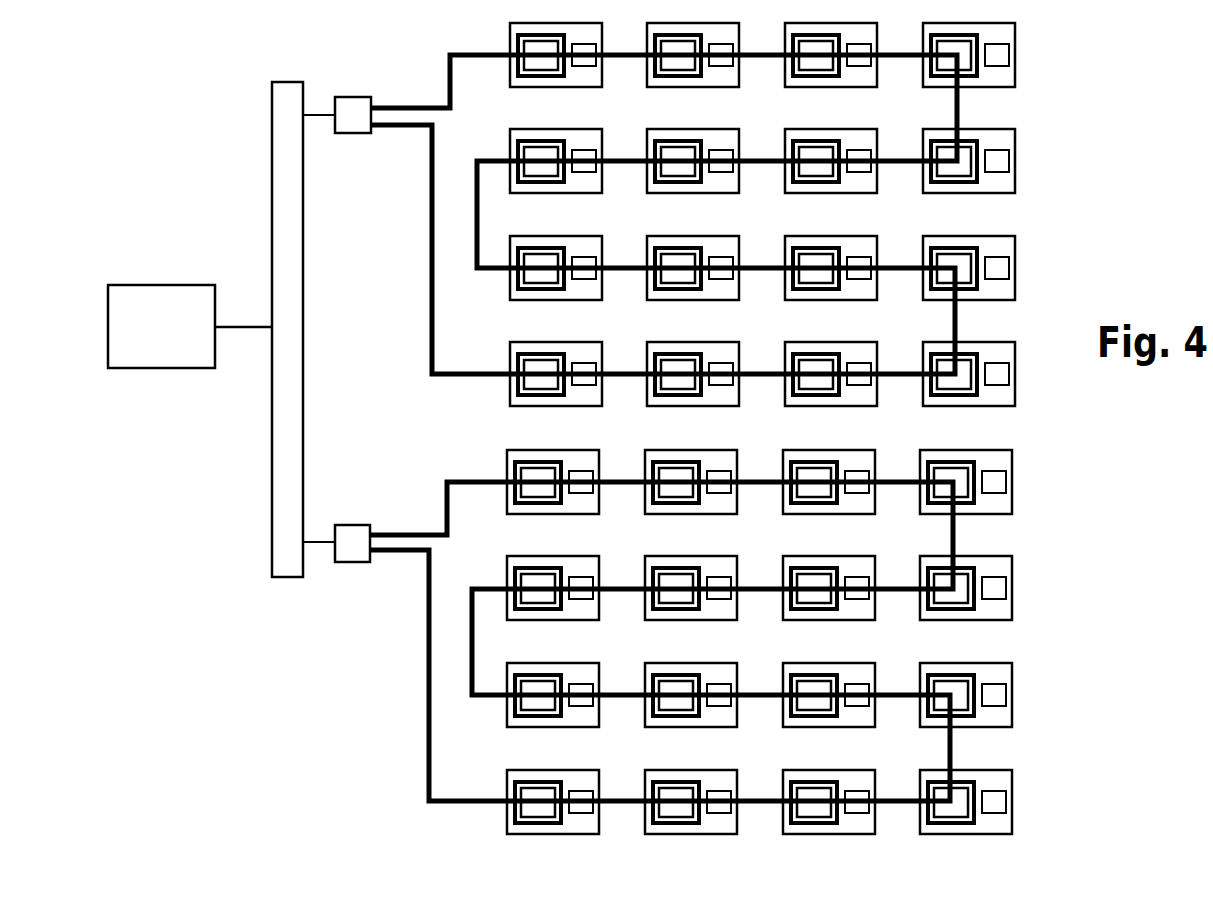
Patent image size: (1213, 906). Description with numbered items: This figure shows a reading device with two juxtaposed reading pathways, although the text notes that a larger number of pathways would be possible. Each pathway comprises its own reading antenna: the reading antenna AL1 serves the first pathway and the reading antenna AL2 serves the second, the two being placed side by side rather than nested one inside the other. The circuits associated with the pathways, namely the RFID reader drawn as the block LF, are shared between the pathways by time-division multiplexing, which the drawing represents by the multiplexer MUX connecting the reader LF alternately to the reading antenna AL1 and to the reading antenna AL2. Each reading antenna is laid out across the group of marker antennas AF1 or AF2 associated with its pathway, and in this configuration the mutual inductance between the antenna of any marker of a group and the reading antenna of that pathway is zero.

The radio frequency source / feed LF is at (195, 368).
The multiplexer MUX is at (272, 243).
The reading antenna AL1 is at (448, 87).
The reading antenna AL2 is at (445, 520).
The antenna array 1 AF1 is at (980, 145).
The antenna array 2 AF2 is at (975, 570).